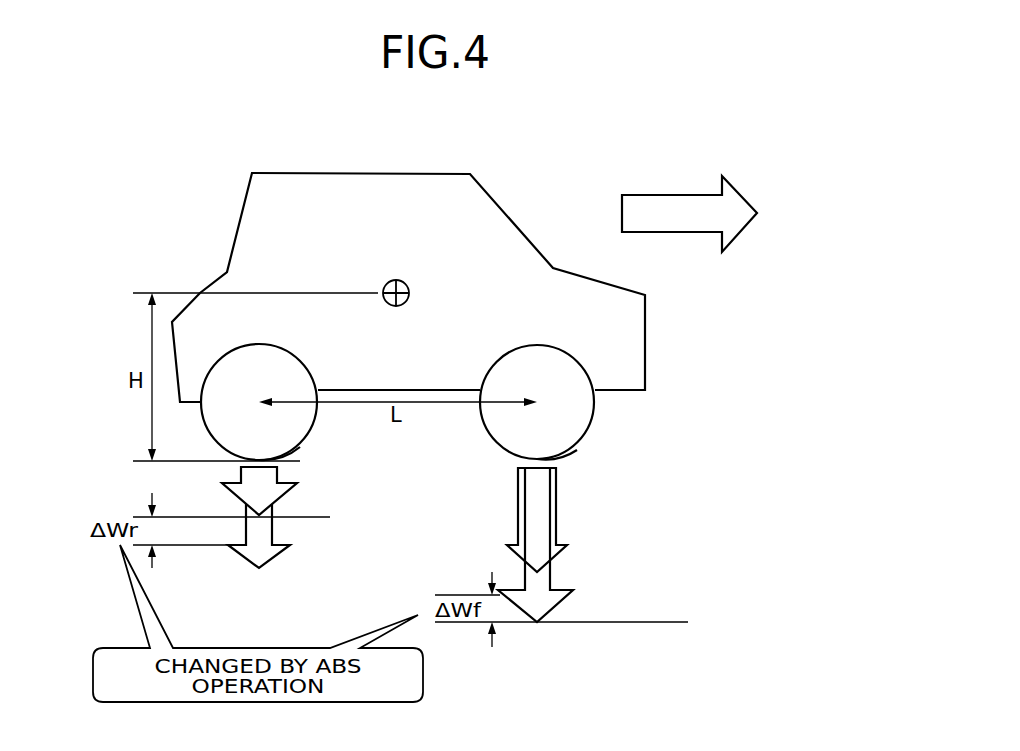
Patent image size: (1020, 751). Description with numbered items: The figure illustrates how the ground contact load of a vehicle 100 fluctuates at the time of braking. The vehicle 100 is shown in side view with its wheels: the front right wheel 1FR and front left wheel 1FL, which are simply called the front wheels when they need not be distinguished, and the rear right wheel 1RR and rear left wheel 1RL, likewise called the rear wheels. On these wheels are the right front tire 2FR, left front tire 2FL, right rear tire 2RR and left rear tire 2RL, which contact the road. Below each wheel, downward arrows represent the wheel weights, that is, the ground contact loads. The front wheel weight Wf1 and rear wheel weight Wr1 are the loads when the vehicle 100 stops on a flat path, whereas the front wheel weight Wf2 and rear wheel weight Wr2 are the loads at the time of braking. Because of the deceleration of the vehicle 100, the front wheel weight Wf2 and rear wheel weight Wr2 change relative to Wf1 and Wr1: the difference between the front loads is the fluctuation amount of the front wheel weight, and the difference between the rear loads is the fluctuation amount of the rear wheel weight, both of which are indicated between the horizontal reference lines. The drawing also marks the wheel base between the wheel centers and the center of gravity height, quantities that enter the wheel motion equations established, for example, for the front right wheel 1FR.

The vehicle 100 is at (443, 173).
The rear right wheel 1RR is at (332, 403).
The rear left wheel 1RL is at (322, 428).
The front right wheel 1FR is at (614, 402).
The front left wheel 1FL is at (608, 421).
The right rear tire 2RR is at (347, 468).
The left rear tire 2RL is at (300, 447).
The right front tire 2FR is at (622, 471).
The left front tire 2FL is at (577, 450).
The rear wheel weight Wr1 is at (273, 533).
The rear wheel weight at braking Wr2 is at (280, 498).
The front wheel weight Wf1 is at (562, 552).
The front wheel weight at braking Wf2 is at (562, 603).